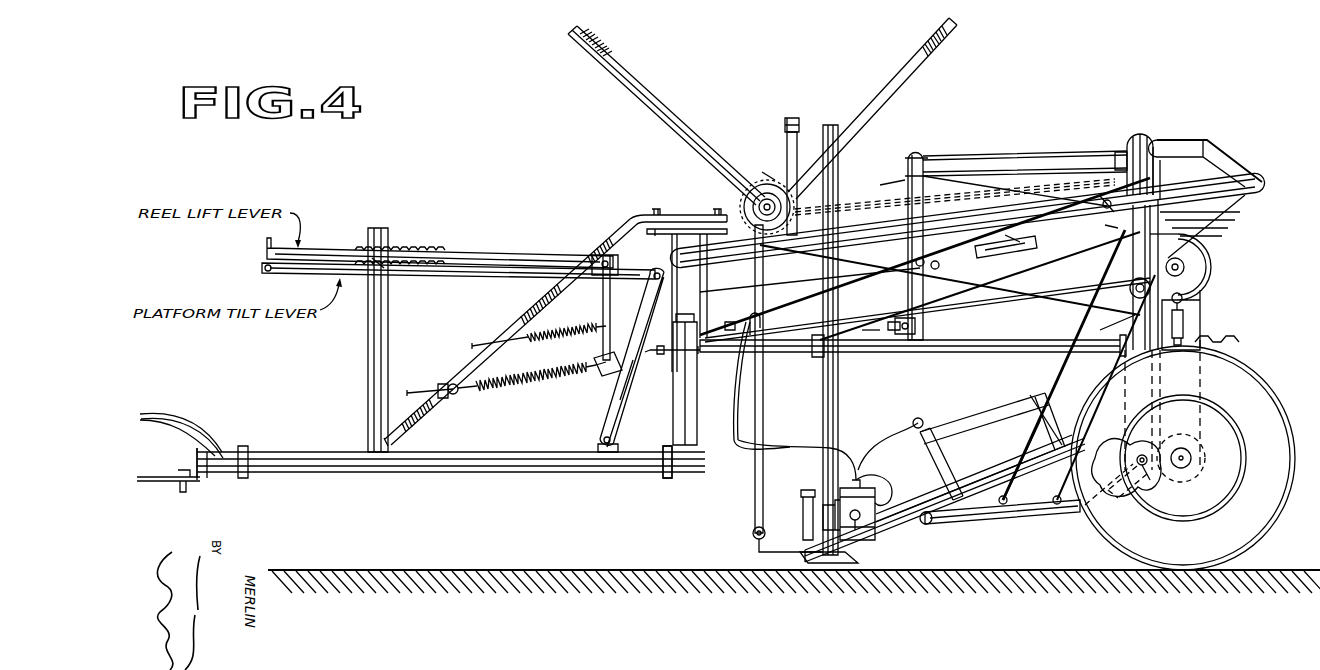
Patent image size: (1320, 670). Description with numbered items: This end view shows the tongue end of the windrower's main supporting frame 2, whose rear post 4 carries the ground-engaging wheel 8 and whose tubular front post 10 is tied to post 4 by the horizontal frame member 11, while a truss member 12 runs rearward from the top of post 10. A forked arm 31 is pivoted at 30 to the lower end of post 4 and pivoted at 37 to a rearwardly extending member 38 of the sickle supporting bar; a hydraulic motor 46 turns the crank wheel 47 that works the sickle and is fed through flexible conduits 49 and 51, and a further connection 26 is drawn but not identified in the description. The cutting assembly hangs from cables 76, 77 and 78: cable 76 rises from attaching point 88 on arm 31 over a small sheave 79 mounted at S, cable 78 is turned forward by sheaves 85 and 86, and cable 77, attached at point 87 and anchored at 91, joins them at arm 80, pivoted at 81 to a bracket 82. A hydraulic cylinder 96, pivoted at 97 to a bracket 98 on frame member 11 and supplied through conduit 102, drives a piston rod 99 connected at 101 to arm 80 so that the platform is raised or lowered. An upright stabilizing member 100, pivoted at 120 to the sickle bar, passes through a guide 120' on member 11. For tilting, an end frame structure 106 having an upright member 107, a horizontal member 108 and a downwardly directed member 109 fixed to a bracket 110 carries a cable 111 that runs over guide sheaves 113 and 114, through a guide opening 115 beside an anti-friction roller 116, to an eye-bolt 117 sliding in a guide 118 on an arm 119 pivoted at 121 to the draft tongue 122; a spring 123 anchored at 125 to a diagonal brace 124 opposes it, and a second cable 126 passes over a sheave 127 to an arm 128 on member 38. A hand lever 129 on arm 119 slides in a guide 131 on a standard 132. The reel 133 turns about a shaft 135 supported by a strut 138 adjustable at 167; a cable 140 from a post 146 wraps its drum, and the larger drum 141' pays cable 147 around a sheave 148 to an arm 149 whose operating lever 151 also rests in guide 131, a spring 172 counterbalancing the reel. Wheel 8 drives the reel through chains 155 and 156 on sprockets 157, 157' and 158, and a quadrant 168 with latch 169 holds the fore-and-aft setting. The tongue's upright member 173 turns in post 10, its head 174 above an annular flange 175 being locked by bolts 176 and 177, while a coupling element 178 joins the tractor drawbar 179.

The main supporting frame 2 is at (1240, 152).
The upright frame member or post 4 is at (1132, 450).
The main carrying wheel 8 is at (1258, 522).
The upright tubular front frame member or post 10 is at (673, 405).
The horizontal frame member 11 is at (984, 342).
The truss member 12 is at (886, 188).
The pivot 26 is at (1007, 501).
The pivot 30 is at (1142, 465).
The forked arm 31 is at (1005, 505).
The pivot 37 is at (928, 524).
The rearwardly extending member 38 is at (925, 535).
The power unit 46 is at (855, 522).
The pitman or crank wheel 47 is at (808, 492).
The flexible conduit 49 is at (882, 475).
The flexible conduit 51 is at (856, 470).
The cable 76 is at (990, 180).
The cable 77 is at (1150, 150).
The cable 78 is at (1143, 140).
The small sheave 79 is at (1108, 229).
The arm 80 is at (922, 152).
The pivot 81 is at (940, 270).
The bracket 82 is at (912, 265).
The sheave 85 is at (1139, 135).
The sheave 86 is at (1120, 152).
The cable connection point 87 is at (1057, 506).
The cable attaching point 88 is at (948, 524).
The anchorage 91 is at (1125, 315).
The hydraulic cylinder 96 is at (870, 333).
The pivot 97 is at (754, 320).
The bracket 98 is at (730, 322).
The piston rod 99 is at (895, 332).
The upright stabilizing member 100 is at (820, 423).
The pivotal connection 101 is at (915, 326).
The conduit 102 is at (740, 410).
The end frame structure 106 is at (1012, 405).
The upright member 107 is at (1048, 432).
The horizontal member 108 is at (962, 418).
The forwardly and downwardly directed member 109 is at (872, 458).
The bracket 110 is at (757, 553).
The cable 111 is at (1155, 158).
The guide sheave 113 is at (1158, 170).
The guide sheave 114 is at (1162, 185).
The guide opening 115 is at (706, 360).
The anti-friction roller 116 is at (660, 358).
The eye-bolt 117 is at (645, 330).
The guide 118 is at (590, 376).
The arm 119 is at (624, 400).
The pivot 120 is at (802, 593).
The guide 120' is at (802, 369).
The pivot 121 is at (604, 453).
The draft tongue 122 is at (480, 473).
The spring 123 is at (492, 395).
The diagonal brace member 124 is at (425, 410).
The anchorage 125 is at (440, 400).
The second cable 126 is at (986, 380).
The sheave 127 is at (1128, 300).
The arm 128 is at (940, 462).
The hand lever 129 is at (447, 274).
The guide 131 is at (384, 280).
The standard 132 is at (372, 355).
The reel 133 is at (655, 84).
The shaft 135 is at (760, 206).
The strut 138 is at (995, 252).
The cable 140 is at (789, 135).
The drum 141' is at (756, 148).
The post 146 is at (755, 508).
The cable 147 is at (1010, 275).
The sheave 148 is at (1095, 262).
The arm 149 is at (602, 300).
The horizontal operating lever 151 is at (482, 252).
The chain 155 is at (1208, 320).
The chain 156 is at (885, 182).
The sprocket 157 is at (1199, 429).
The sprocket 157' is at (1196, 241).
The sprocket 158 is at (1212, 266).
The strut adjustment 167 is at (1018, 240).
The quadrant 168 is at (1232, 336).
The latch 169 is at (1183, 296).
The spring 172 is at (545, 344).
The upright member 173 is at (683, 472).
The disc-like head 174 is at (676, 229).
The annular flange 175 is at (662, 237).
The bolt 176 is at (656, 209).
The bolt 177 is at (717, 209).
The coupling element 178 is at (200, 480).
The drawbar 179 is at (152, 480).
The sheave mounting location S is at (1103, 199).